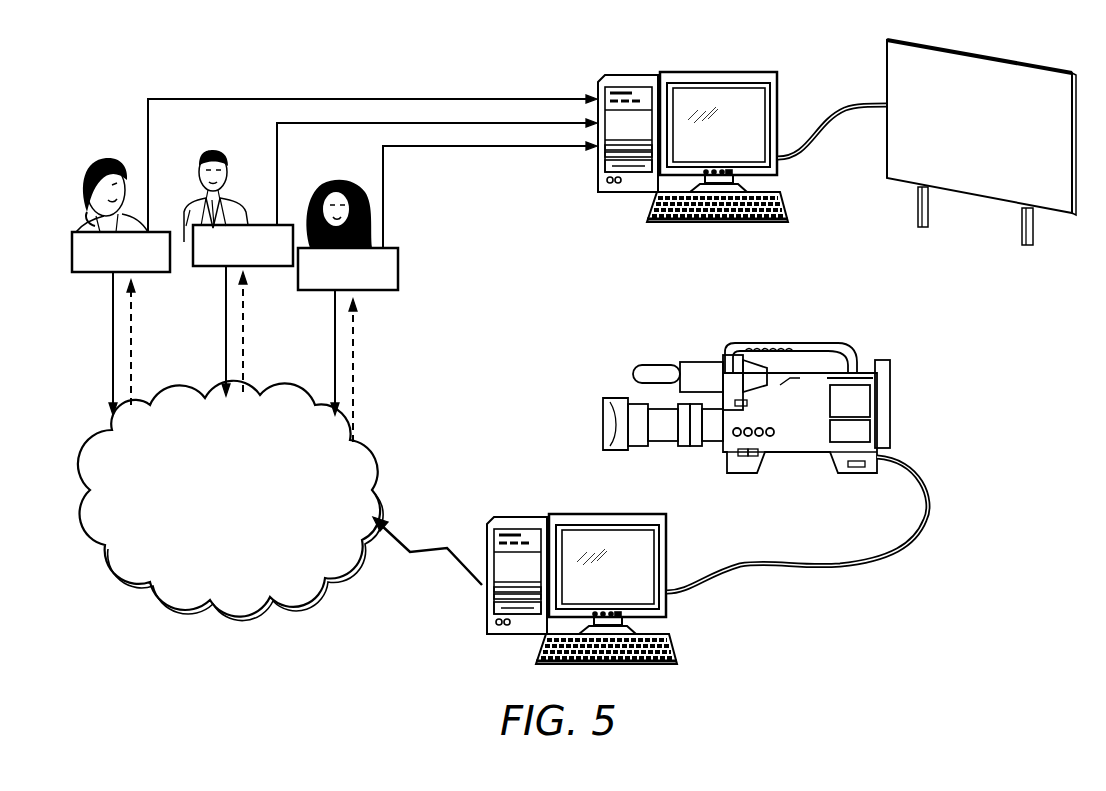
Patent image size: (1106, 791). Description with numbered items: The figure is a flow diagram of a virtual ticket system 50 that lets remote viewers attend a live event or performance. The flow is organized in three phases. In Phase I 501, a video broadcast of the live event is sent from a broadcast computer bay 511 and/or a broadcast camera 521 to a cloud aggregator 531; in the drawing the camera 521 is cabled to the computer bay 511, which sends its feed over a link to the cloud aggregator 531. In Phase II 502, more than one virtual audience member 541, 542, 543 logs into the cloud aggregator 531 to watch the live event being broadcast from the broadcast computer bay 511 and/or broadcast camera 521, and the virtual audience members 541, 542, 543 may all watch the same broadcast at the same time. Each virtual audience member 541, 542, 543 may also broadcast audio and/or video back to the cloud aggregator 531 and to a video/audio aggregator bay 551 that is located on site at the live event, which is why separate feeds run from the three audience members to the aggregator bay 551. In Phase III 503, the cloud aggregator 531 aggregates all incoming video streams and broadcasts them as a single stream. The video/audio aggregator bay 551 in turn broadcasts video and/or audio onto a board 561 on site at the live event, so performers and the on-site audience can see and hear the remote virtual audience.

The virtual ticket system 50 is at (325, 636).
The Phase I 501 is at (408, 532).
The Phase II 502 is at (562, 93).
The Phase III 503 is at (355, 338).
The broadcast computer bay 511 is at (580, 513).
The broadcast camera 521 is at (700, 360).
The cloud aggregator 531 is at (216, 531).
The virtual audience member 541 is at (94, 272).
The virtual audience member 542 is at (211, 268).
The virtual audience member 543 is at (378, 291).
The video/audio aggregator bay 551 is at (630, 192).
The board 561 is at (989, 148).